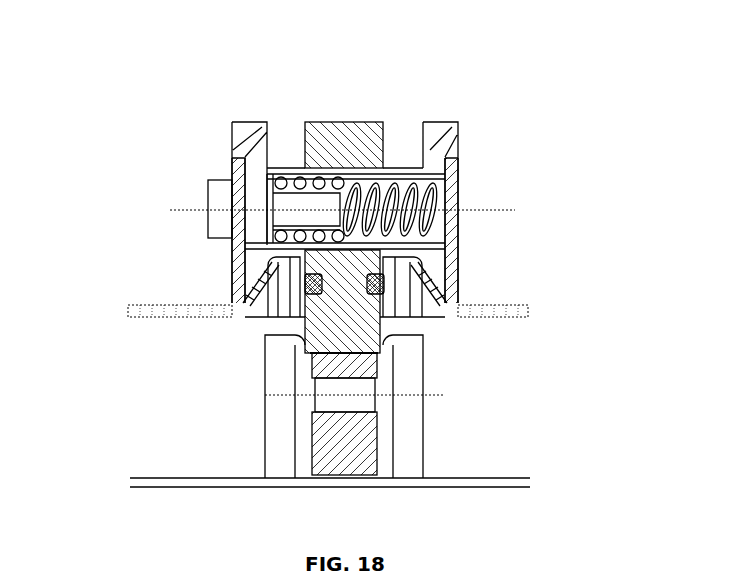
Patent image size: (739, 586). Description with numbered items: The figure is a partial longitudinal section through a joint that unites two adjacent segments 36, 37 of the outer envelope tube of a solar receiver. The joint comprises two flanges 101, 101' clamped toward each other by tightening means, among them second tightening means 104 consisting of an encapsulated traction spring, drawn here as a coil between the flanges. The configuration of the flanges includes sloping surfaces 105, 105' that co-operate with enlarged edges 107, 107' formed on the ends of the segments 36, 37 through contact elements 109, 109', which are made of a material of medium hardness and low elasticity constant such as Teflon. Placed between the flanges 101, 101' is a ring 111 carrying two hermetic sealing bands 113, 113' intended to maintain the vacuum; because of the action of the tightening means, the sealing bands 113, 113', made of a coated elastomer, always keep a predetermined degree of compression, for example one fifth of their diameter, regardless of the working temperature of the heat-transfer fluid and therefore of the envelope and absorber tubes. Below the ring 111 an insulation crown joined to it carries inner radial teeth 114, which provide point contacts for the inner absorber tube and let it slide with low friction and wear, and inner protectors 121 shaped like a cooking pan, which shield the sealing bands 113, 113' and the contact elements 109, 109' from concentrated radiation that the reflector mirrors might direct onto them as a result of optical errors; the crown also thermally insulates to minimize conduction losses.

The flange 101 is at (253, 186).
The flange 101' is at (448, 186).
The ring 111 is at (342, 132).
The second tightening means 104 is at (280, 205).
The hermetic sealing band 113 is at (213, 258).
The hermetic sealing band 113' is at (479, 269).
The sloping surface 105 is at (206, 230).
The sloping surface 105' is at (492, 230).
The segment of outer envelope tube 36 is at (128, 311).
The segment of outer envelope tube 37 is at (530, 313).
The contact element 109 is at (253, 320).
The contact element 109' is at (443, 317).
The enlarged edge 107 is at (240, 367).
The enlarged edge 107' is at (463, 367).
The inner protector 121 is at (295, 333).
The inner radial tooth 114 is at (312, 449).